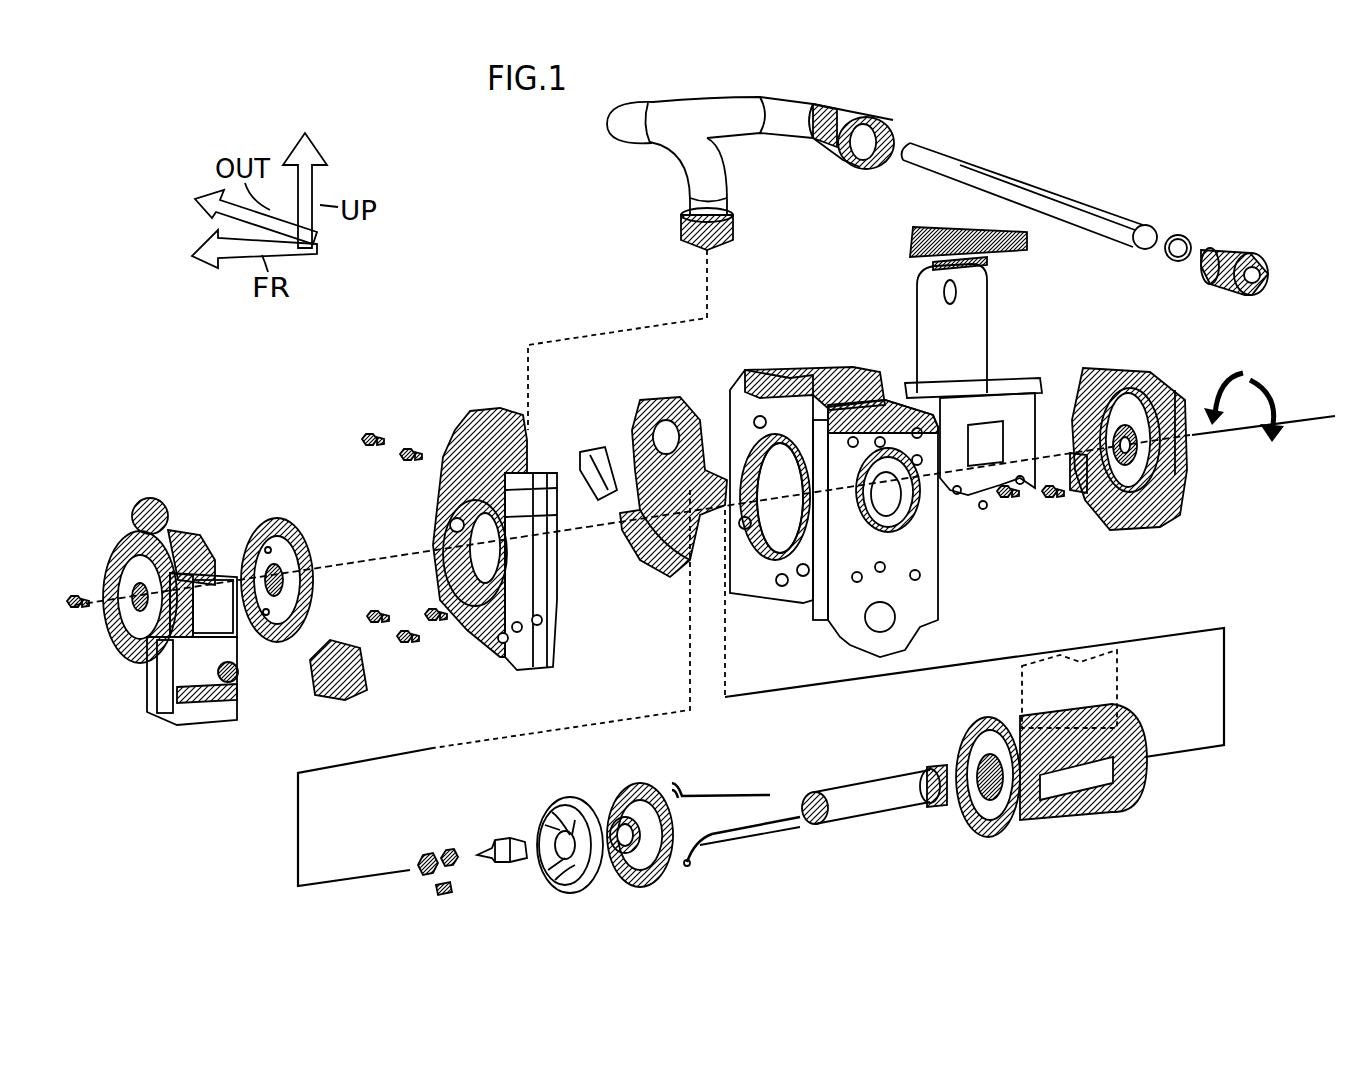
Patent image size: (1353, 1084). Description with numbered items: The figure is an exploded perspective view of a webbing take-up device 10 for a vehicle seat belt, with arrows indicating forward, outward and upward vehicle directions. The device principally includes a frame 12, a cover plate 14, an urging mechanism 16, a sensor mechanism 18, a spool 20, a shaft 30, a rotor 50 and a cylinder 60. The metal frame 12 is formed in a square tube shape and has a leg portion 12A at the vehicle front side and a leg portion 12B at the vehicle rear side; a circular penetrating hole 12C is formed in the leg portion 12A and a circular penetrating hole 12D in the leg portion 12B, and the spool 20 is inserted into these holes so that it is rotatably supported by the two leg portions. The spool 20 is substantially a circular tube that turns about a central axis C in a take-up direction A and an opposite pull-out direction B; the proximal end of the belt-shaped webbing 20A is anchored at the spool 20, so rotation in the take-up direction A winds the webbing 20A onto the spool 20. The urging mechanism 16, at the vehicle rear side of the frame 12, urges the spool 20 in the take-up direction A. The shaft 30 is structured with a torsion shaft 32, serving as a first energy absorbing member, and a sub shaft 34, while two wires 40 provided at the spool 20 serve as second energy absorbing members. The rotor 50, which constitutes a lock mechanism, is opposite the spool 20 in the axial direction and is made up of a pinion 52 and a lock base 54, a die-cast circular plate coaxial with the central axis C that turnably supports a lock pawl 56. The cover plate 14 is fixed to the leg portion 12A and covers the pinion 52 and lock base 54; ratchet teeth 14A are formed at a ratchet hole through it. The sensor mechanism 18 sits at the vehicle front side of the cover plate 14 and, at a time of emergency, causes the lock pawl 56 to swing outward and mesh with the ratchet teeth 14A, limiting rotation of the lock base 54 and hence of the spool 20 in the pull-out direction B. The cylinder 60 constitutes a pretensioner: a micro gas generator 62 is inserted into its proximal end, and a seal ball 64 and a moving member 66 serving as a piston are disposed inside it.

The webbing take-up device 10 is at (1088, 116).
The frame 12 is at (846, 442).
The leg portion 12A is at (731, 501).
The leg portion 12B is at (862, 383).
The penetrating hole 12C is at (775, 532).
The penetrating hole 12D is at (905, 493).
The cover plate 14 is at (448, 494).
The ratchet teeth 14A is at (452, 522).
The urging mechanism 16 is at (1130, 355).
The sensor mechanism 18 is at (160, 478).
The spool 20 is at (1079, 773).
The webbing 20A is at (1085, 680).
The shaft 30 is at (696, 831).
The torsion shaft 32 is at (875, 820).
The sub shaft 34 is at (507, 838).
The wires 40 is at (720, 792).
The rotor 50 is at (635, 830).
The pinion 52 is at (625, 788).
The lock base 54 is at (548, 805).
The lock pawl 56 is at (442, 852).
The cylinder 60 is at (740, 118).
The micro gas generator 62 is at (1222, 245).
The seal ball 64 is at (1178, 234).
The moving member 66 is at (1096, 222).
The take-up direction A is at (1265, 380).
The pull-out direction B is at (1222, 375).
The central axis C is at (1280, 440).